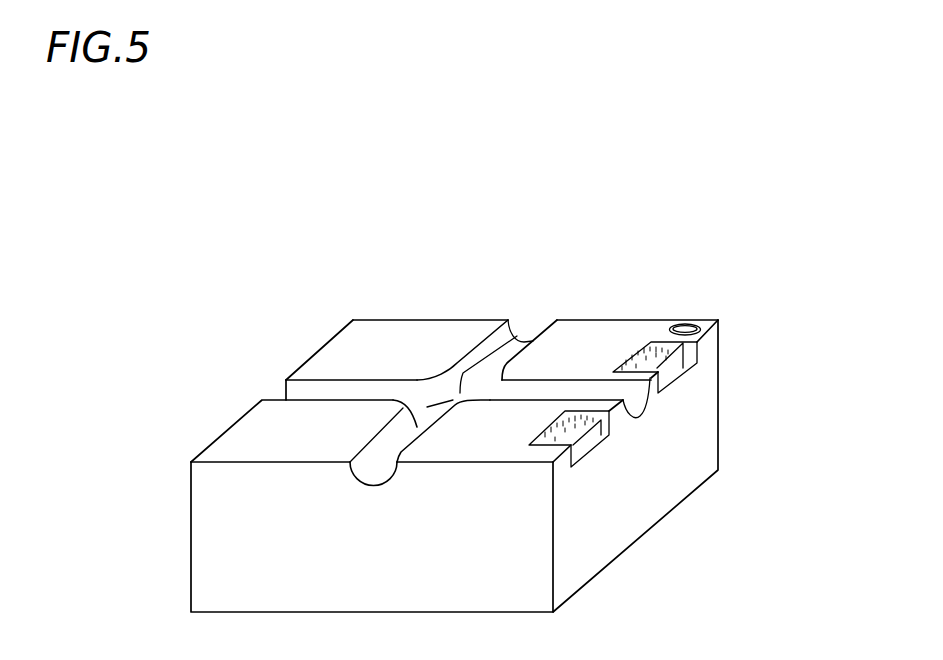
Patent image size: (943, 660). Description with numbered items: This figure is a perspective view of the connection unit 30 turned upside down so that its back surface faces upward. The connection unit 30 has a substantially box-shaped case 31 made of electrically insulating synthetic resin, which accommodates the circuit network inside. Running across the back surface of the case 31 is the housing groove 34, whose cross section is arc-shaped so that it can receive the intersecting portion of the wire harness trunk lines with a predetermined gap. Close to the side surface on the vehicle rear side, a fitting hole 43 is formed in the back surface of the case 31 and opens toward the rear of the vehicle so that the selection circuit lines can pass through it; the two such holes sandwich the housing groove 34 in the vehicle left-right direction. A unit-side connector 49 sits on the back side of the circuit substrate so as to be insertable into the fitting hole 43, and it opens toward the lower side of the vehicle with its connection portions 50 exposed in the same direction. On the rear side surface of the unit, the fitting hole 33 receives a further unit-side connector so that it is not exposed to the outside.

The connection unit 30 is at (380, 306).
The case 31 is at (463, 318).
The fitting hole 33 is at (688, 323).
The housing groove 34 is at (514, 340).
The fitting hole 43 is at (709, 395).
The unit-side connector 49 is at (677, 363).
The connection portion 50 is at (684, 367).